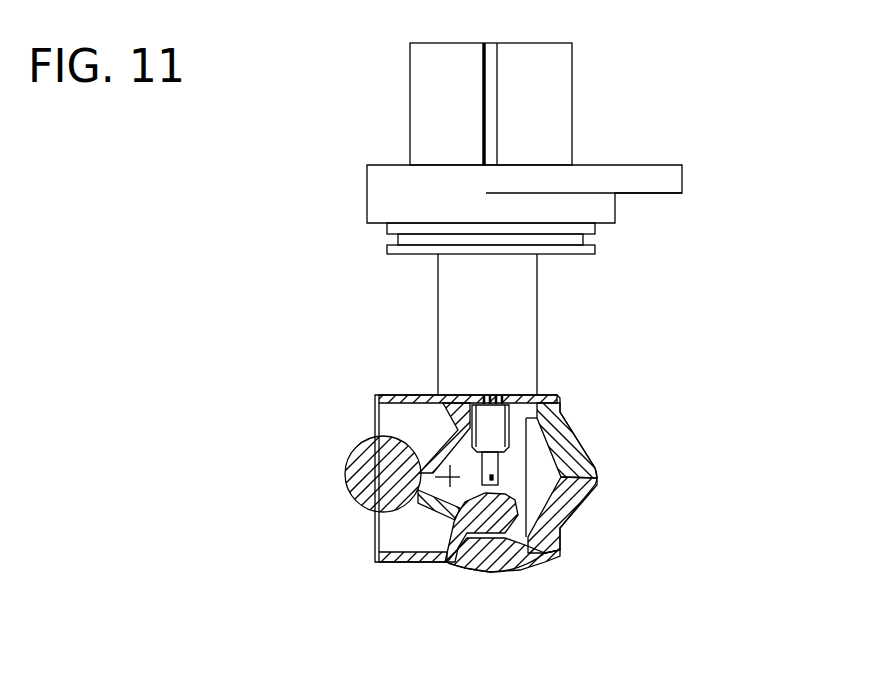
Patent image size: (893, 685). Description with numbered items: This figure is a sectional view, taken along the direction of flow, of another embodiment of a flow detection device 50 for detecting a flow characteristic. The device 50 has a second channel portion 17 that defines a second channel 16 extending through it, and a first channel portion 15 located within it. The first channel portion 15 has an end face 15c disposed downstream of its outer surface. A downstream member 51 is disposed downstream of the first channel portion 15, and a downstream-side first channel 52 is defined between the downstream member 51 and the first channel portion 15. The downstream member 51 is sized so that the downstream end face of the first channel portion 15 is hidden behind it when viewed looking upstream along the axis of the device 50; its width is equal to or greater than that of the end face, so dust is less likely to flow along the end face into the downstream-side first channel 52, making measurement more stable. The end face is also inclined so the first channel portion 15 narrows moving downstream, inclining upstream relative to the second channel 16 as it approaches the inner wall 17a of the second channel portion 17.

The first channel portion 15 is at (475, 565).
The end face 15c is at (508, 527).
The second channel 16 is at (390, 531).
The second channel portion 17 is at (390, 563).
The inner wall 17a is at (505, 548).
The flow detection device 50 is at (552, 322).
The downstream member 51 is at (600, 470).
The downstream-side first channel 52 is at (524, 445).